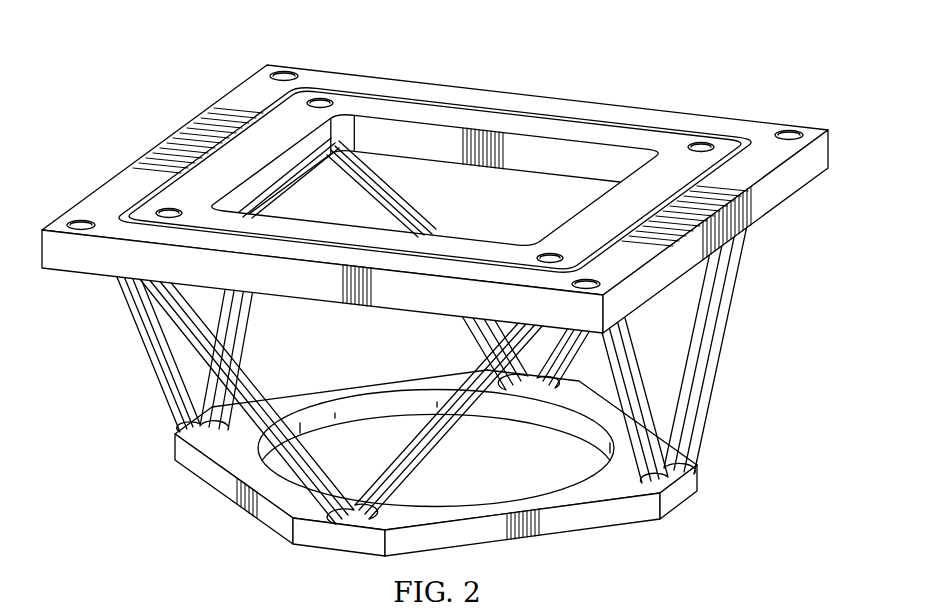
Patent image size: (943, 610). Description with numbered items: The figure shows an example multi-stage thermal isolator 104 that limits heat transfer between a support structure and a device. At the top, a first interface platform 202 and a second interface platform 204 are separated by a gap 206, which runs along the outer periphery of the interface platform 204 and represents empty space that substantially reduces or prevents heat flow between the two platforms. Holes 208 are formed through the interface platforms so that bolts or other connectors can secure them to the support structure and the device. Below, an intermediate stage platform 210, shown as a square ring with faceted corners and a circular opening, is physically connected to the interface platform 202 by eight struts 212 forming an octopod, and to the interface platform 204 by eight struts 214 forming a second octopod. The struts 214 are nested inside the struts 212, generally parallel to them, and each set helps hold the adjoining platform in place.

The multi-stage thermal isolator 104 is at (436, 290).
The first interface platform 202 is at (436, 190).
The second interface platform 204 is at (568, 232).
The gap 206 is at (745, 132).
The holes 208 is at (792, 130).
The intermediate stage platform 210 is at (212, 477).
The struts 212 is at (155, 365).
The struts 214 is at (252, 330).